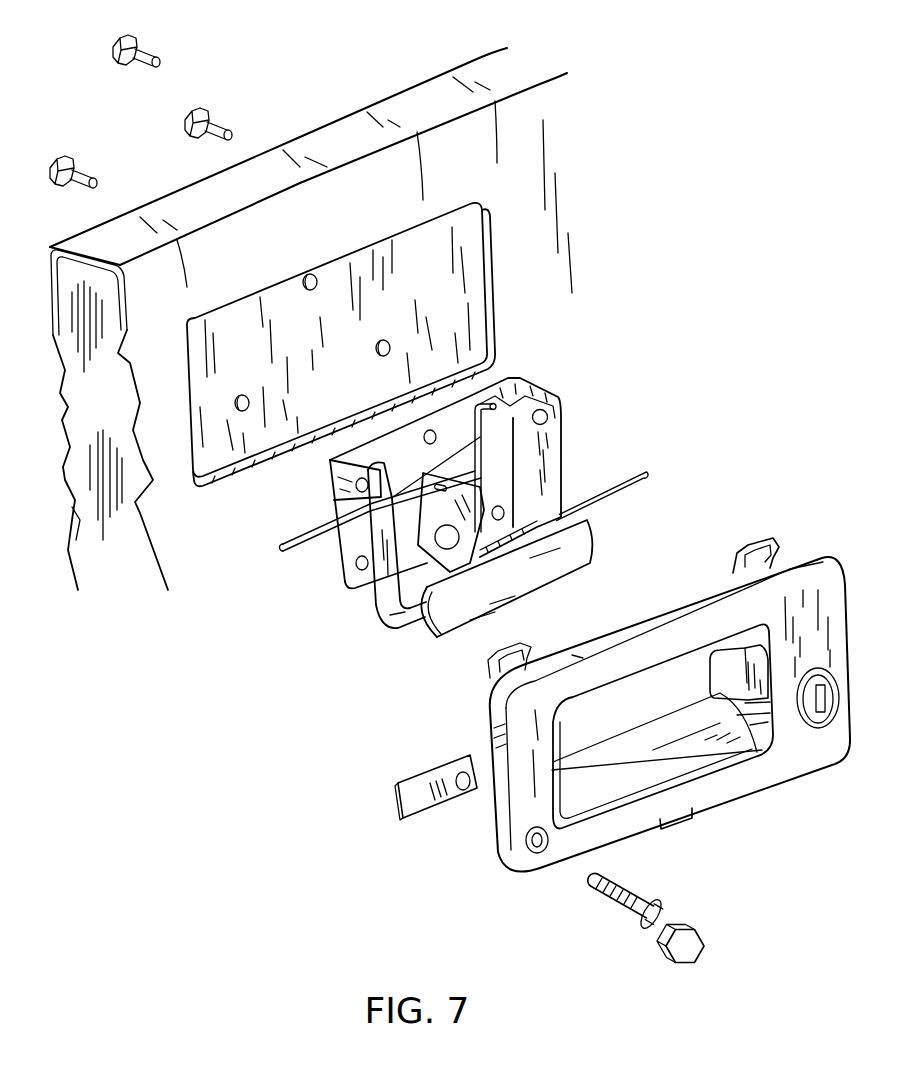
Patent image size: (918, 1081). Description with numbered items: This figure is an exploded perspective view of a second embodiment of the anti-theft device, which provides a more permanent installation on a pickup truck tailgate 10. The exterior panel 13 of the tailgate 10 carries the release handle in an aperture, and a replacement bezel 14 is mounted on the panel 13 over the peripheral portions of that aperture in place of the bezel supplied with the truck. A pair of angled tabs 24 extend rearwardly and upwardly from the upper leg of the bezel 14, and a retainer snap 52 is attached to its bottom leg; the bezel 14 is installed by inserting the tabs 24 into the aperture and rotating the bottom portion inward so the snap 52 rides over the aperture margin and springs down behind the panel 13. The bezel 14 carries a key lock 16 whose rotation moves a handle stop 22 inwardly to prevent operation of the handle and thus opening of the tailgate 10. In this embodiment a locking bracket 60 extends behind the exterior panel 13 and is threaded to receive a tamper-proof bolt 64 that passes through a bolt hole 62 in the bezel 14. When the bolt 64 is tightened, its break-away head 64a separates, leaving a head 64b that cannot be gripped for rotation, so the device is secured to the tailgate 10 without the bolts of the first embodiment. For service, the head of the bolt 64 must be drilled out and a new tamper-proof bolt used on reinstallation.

The tailgate 10 is at (397, 92).
The exterior panel 13 is at (229, 528).
The bezel 14 is at (753, 790).
The key lock 16 is at (830, 706).
The handle stop 22 is at (715, 665).
The angled tabs 24 is at (762, 550).
The retainer snap 52 is at (680, 825).
The locking bracket 60 is at (417, 803).
The bolt hole 62 is at (542, 853).
The tamper-proof bolt 64 is at (657, 937).
The break-away head 64a is at (698, 934).
The head 64b is at (663, 907).